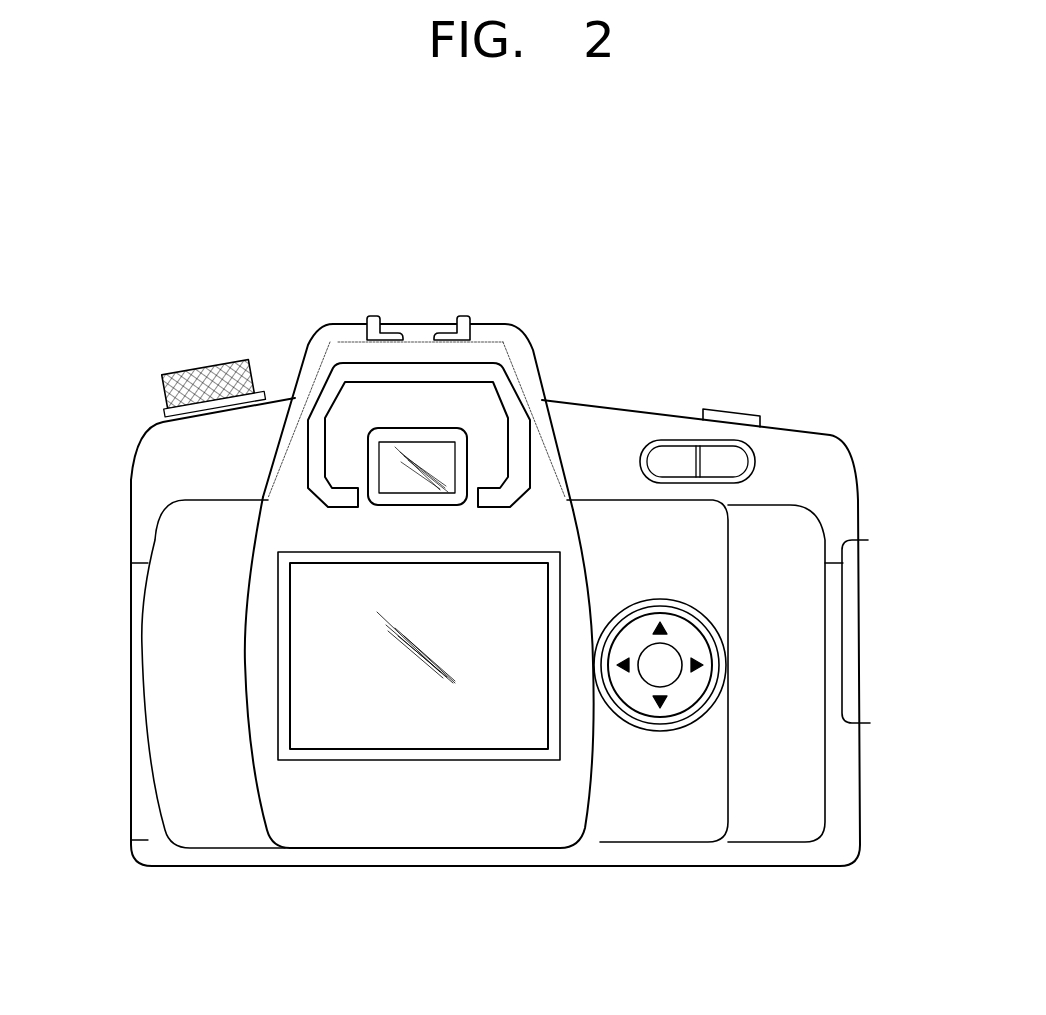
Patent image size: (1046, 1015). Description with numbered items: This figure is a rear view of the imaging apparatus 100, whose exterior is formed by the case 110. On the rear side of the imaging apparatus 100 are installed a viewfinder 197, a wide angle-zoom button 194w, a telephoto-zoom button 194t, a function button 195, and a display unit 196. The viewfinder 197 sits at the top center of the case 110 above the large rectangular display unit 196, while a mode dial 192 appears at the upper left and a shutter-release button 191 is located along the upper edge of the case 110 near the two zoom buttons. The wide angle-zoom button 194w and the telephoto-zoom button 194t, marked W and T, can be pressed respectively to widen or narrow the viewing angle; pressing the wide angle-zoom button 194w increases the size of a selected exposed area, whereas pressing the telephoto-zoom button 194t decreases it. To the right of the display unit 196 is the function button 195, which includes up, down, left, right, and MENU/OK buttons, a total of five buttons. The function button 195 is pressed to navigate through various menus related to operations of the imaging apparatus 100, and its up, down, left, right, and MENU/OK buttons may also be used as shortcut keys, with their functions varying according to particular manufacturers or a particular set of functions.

The imaging apparatus 100 is at (493, 562).
The case 110 is at (840, 492).
The shutter-release button 191 is at (735, 415).
The mode dial 192 is at (205, 378).
The wide angle-zoom button 194w is at (667, 450).
The telephoto-zoom button 194t is at (740, 458).
The function button 195 is at (722, 663).
The display unit 196 is at (315, 662).
The viewfinder 197 is at (448, 455).